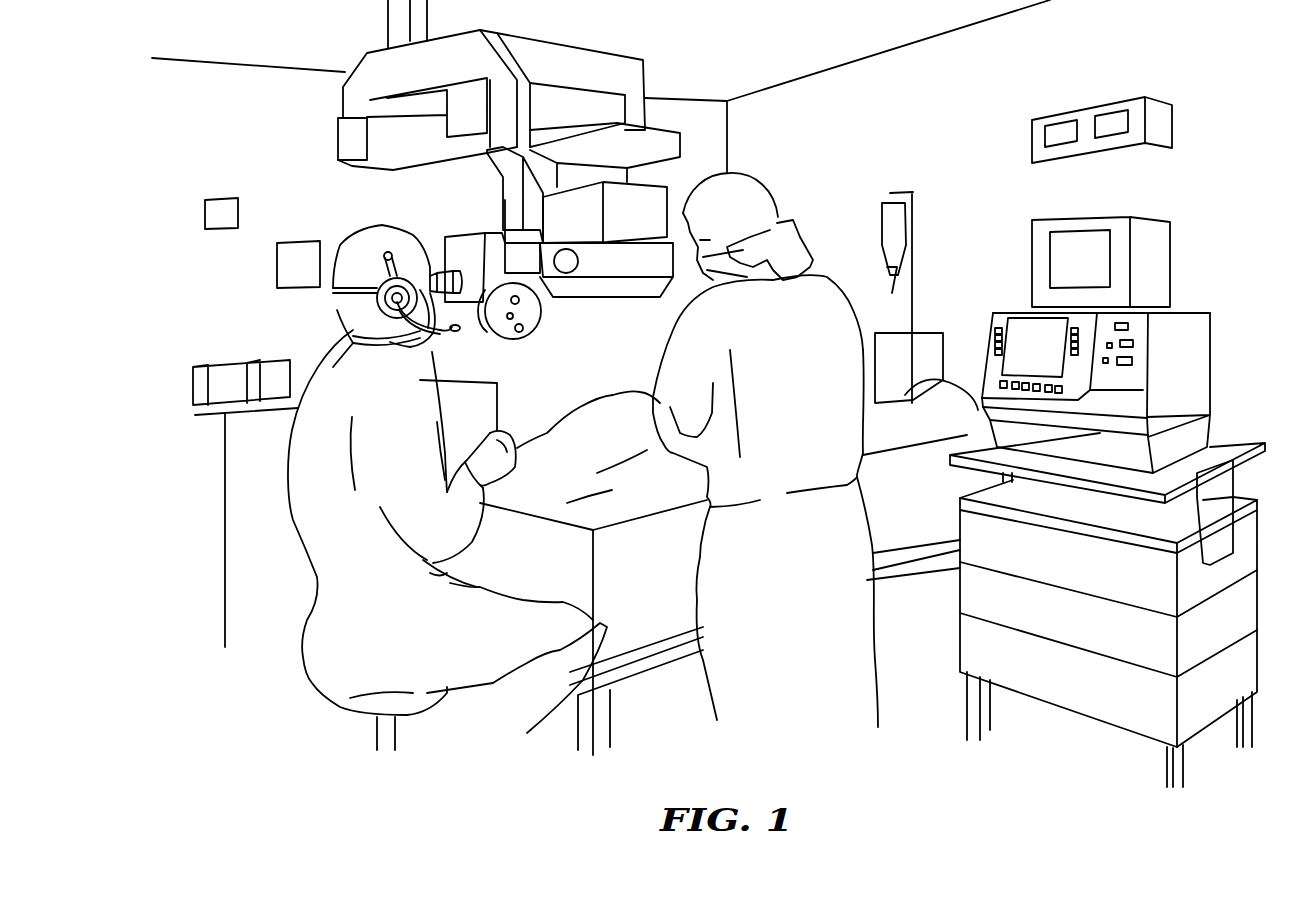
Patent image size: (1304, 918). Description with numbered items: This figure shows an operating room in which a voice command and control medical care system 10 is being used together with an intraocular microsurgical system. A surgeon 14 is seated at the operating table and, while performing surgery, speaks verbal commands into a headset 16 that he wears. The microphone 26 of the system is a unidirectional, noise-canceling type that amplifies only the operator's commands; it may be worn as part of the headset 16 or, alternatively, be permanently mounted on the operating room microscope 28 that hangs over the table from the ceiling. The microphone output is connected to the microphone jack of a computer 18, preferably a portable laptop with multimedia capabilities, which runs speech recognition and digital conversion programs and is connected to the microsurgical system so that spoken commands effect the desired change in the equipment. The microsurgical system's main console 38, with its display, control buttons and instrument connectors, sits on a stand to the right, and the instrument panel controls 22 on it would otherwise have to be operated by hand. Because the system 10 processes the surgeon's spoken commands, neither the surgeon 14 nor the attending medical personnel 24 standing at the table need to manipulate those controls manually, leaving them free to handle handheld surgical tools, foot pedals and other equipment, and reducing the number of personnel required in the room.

The voice command and control medical care system 10 is at (974, 137).
The surgeon 14 is at (348, 516).
The headset 16 is at (386, 356).
The computer 18 is at (1098, 215).
The instrument panel controls 22 is at (1000, 305).
The attending medical personnel 24 is at (797, 414).
The microphone 26 is at (447, 331).
The operating room microscope 28 is at (467, 245).
The main console 38 is at (1200, 312).